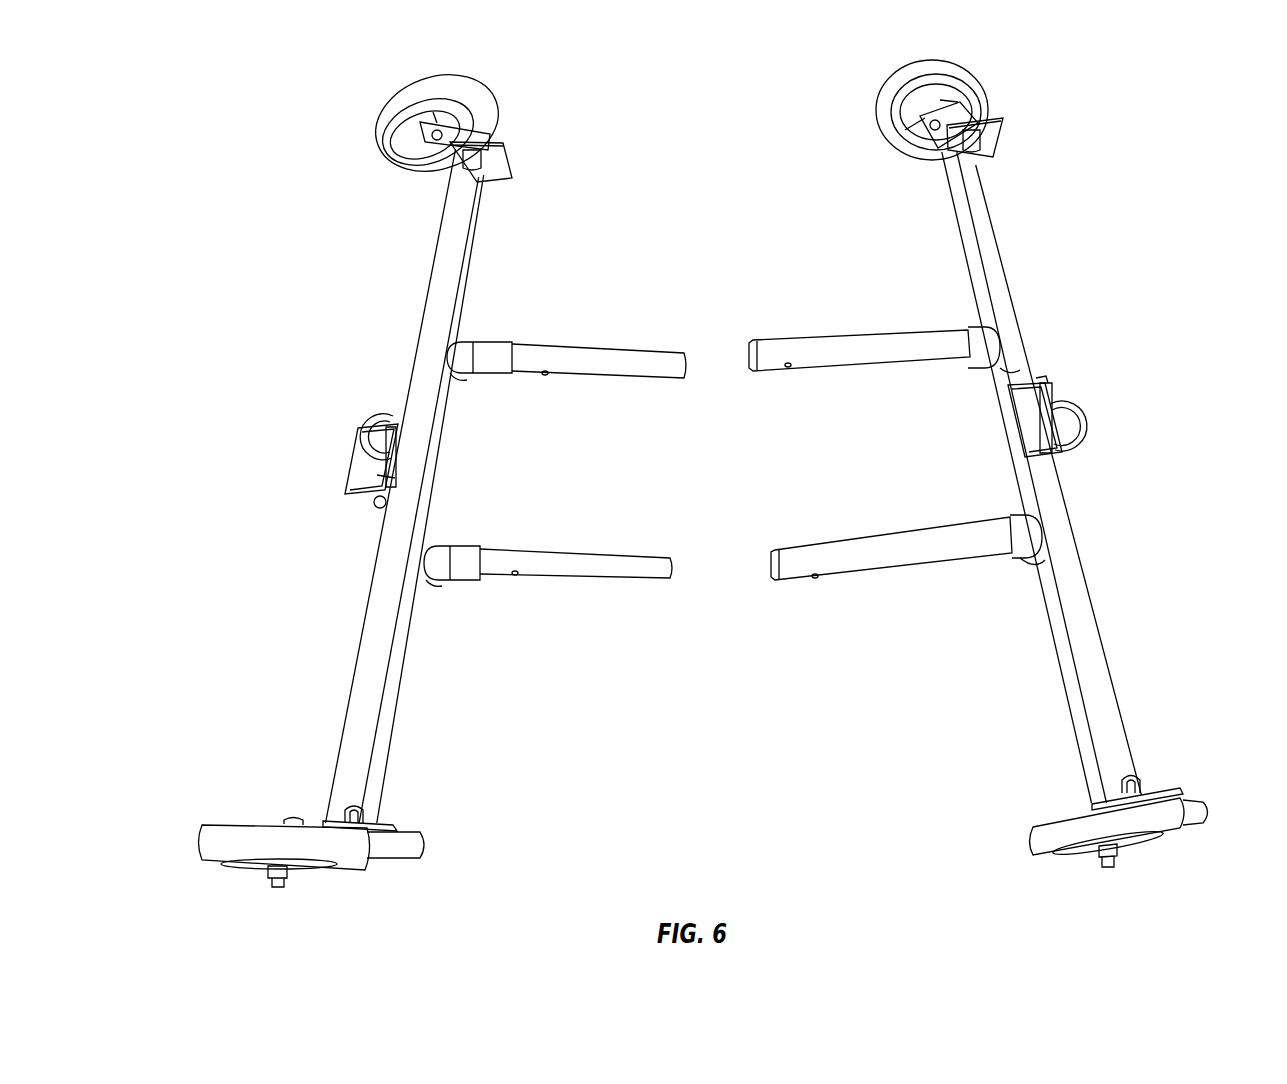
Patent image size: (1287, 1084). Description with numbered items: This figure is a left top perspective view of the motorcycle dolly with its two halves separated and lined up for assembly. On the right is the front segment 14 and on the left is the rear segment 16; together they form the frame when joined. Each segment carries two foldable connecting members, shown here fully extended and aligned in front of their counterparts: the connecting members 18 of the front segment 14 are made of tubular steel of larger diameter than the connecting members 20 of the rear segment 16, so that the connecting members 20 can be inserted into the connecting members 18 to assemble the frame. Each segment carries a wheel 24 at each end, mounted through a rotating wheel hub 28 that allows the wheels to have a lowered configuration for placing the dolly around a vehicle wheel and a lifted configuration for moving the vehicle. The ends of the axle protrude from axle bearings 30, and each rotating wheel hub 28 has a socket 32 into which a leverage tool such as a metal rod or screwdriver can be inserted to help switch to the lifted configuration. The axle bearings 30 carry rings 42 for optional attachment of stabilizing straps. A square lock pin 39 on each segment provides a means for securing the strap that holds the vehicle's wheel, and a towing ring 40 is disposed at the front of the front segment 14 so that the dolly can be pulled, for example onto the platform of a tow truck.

The front segment 14 is at (1100, 672).
The rear segment 16 is at (368, 700).
The connecting member 18 is at (837, 343).
The connecting member 20 is at (570, 355).
The wheel 24 is at (398, 90).
The rotating wheel hub 28 is at (408, 132).
The axle bearing 30 is at (495, 155).
The socket 32 is at (397, 858).
The square lock pin 39 is at (370, 432).
The towing ring 40 is at (1093, 425).
The ring 42 is at (467, 158).